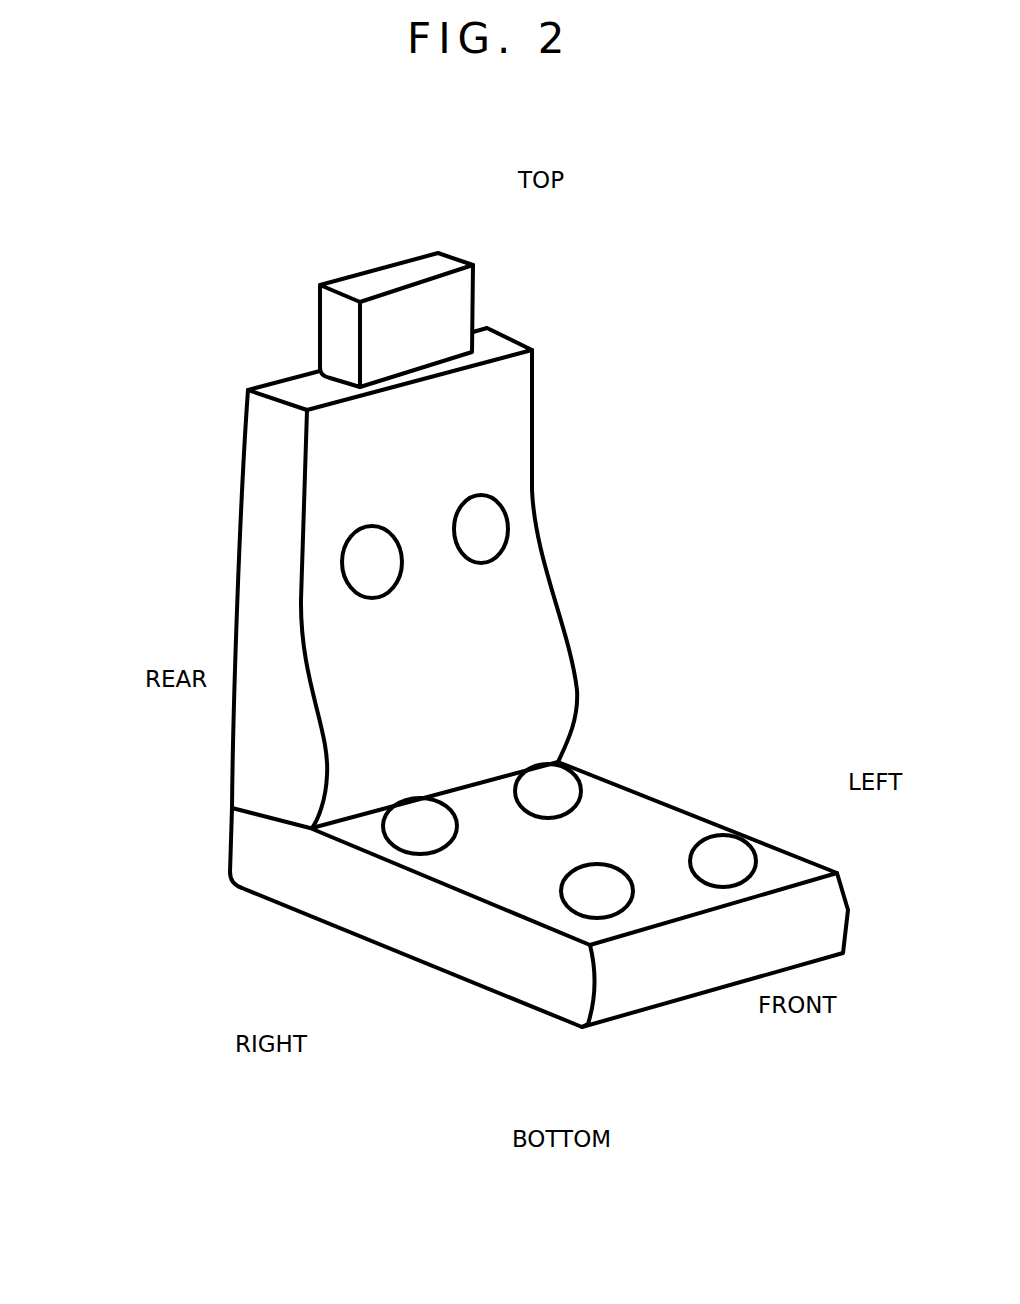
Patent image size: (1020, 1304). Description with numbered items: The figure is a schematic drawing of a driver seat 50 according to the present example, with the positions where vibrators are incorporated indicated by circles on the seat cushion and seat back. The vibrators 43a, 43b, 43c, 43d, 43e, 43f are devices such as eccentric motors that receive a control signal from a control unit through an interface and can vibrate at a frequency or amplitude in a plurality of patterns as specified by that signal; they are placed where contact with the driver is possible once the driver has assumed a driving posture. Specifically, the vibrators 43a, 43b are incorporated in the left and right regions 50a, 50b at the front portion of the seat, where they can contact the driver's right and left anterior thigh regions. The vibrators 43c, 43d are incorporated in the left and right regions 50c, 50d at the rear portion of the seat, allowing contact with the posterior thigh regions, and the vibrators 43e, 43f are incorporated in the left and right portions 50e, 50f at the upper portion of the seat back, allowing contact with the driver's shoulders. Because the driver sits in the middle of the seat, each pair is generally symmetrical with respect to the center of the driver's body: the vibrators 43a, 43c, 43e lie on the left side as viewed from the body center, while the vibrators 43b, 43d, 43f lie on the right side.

The driver seat 50 is at (687, 357).
The left region at front portion of seat 50a is at (788, 799).
The right region at front portion of seat 50b is at (540, 974).
The left region at rear portion of seat 50c is at (661, 720).
The right region at rear portion of seat 50d is at (259, 872).
The left portion at upper portion of seat back 50e is at (612, 521).
The right portion at upper portion of seat back 50f is at (228, 562).
The vibrator 43a is at (727, 857).
The vibrator 43b is at (607, 897).
The vibrator 43c is at (562, 785).
The vibrator 43d is at (430, 827).
The vibrator 43e is at (485, 533).
The vibrator 43f is at (360, 565).